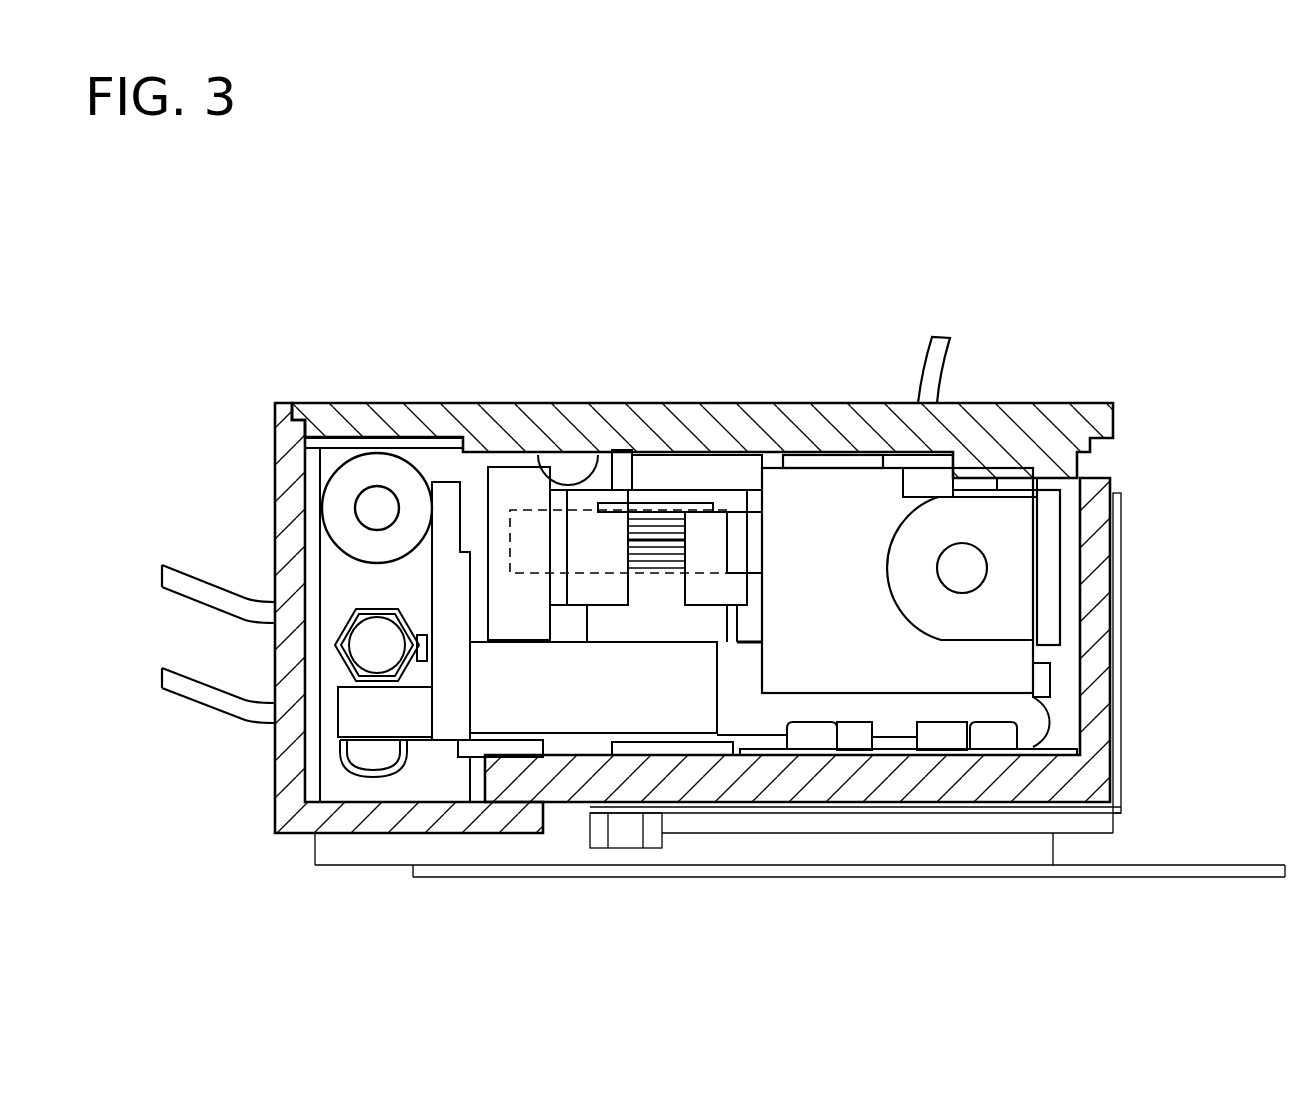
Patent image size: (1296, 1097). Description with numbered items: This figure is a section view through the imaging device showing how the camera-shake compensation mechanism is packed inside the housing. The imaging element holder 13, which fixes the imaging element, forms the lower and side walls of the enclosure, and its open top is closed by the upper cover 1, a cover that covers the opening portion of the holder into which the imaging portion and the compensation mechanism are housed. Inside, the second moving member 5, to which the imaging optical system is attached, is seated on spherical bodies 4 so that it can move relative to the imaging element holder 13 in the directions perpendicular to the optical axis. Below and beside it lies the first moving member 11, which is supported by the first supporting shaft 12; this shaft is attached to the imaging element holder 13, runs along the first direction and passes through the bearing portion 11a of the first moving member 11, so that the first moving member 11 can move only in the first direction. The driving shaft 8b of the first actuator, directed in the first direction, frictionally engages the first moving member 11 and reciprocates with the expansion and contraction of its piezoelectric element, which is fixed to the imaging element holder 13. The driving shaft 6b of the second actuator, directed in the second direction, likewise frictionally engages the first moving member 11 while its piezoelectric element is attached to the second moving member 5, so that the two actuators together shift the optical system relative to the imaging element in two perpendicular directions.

The upper cover 1 is at (473, 418).
The spherical bodies 4 is at (573, 467).
The second moving member 5 is at (828, 500).
The driving shaft 6b is at (738, 540).
The driving shaft 8b is at (363, 647).
The first moving member 11 is at (565, 700).
The bearing portion 11a is at (368, 478).
The first supporting shaft 12 is at (372, 515).
The imaging element holder 13 is at (803, 775).